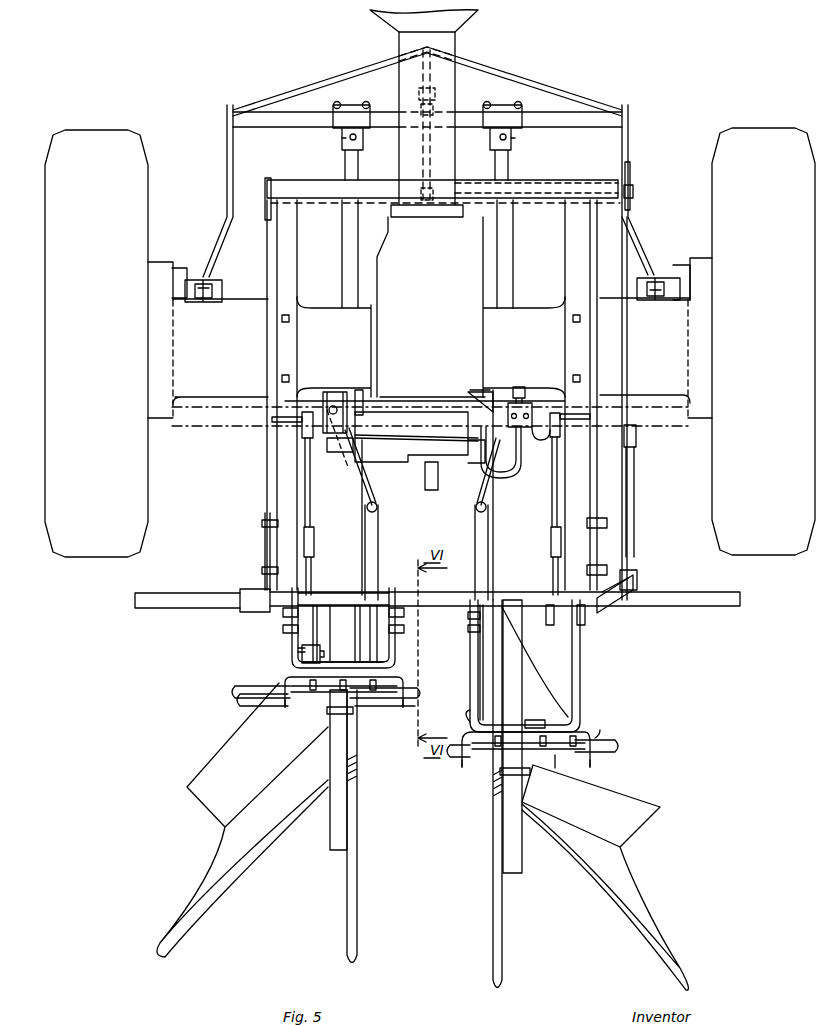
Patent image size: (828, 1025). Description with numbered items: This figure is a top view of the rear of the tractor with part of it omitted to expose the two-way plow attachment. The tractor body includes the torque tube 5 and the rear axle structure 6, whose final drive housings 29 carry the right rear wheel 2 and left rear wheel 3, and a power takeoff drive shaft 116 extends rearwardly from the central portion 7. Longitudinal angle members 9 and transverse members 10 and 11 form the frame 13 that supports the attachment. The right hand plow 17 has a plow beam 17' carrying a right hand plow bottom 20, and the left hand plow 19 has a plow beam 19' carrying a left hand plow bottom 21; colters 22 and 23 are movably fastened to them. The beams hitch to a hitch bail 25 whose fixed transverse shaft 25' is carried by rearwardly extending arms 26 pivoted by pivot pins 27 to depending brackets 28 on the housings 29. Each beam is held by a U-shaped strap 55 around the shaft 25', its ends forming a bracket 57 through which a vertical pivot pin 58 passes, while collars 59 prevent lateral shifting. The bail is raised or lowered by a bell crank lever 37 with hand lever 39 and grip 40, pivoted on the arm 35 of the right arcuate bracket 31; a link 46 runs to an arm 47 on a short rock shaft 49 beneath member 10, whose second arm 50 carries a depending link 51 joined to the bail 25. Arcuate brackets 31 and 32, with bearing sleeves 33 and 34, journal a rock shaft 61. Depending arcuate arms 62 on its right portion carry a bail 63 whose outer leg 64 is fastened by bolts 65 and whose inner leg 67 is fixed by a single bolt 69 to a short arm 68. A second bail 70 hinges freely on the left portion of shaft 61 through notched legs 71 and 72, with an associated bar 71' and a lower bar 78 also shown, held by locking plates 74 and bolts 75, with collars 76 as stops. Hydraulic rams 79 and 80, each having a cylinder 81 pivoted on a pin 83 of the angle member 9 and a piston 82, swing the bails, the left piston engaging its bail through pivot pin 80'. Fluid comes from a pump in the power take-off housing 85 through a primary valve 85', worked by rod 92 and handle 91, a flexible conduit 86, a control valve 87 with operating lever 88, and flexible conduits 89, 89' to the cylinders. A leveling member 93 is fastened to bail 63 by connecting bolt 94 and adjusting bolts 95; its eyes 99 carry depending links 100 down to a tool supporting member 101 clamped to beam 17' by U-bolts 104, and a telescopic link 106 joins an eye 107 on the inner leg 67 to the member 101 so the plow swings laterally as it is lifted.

The right rear wheel 2 is at (712, 152).
The left rear wheel 3 is at (148, 213).
The torque tube 5 is at (452, 42).
The rear axle structure 6 is at (217, 393).
The central portion 7 is at (432, 348).
The angle members 9 is at (267, 350).
The transverse member 10 is at (334, 184).
The transverse member 11 is at (436, 400).
The frame 13 is at (277, 455).
The right hand plow 17 is at (590, 795).
The plow beam 17' is at (530, 536).
The left hand plow 19 is at (257, 823).
The plow beam 19' is at (336, 525).
The right hand plow bottom 20 is at (630, 870).
The left hand plow bottom 21 is at (203, 888).
The colter 22 is at (472, 535).
The colter 23 is at (378, 545).
The hitch bail 25 is at (427, 81).
The fixed transverse shaft 25' is at (427, 128).
The rearwardly extending arms 26 is at (222, 246).
The pivot pins 27 is at (225, 290).
The depending brackets 28 is at (186, 270).
The final drive housings 29 is at (148, 290).
The arcuate bracket 31 is at (606, 550).
The arcuate bracket 32 is at (265, 548).
The bearing sleeve 33 is at (633, 607).
The bearing sleeve 34 is at (252, 613).
The arm 35 is at (612, 600).
The bell crank lever 37 is at (638, 572).
The hand lever portion 39 is at (637, 470).
The grip 40 is at (638, 434).
The link 46 is at (625, 332).
The arm 47 is at (633, 172).
The rock shaft 49 is at (635, 191).
The second arm 50 is at (424, 165).
The link 51 is at (432, 85).
The U-shaped strap 55 is at (351, 104).
The bracket 57 is at (342, 140).
The pivot pin 58 is at (358, 138).
The collars 59 is at (334, 106).
The rock shaft 61 is at (182, 600).
The depending arcuate arms 62 is at (552, 628).
The bail 63 is at (535, 722).
The outer leg 64 is at (580, 665).
The bolts 65 is at (582, 628).
The inner leg 67 is at (478, 668).
The short arm 68 is at (468, 640).
The bolt 69 is at (466, 615).
The second bail 70 is at (292, 666).
The leg 71 is at (329, 634).
The bar 71' is at (378, 634).
The leg 72 is at (298, 650).
The locking plate 74 is at (290, 612).
The bolts 75 is at (283, 630).
The collars 76 is at (310, 598).
The bottom bar 78 is at (298, 665).
The hydraulic ram 79 is at (532, 495).
The hydraulic ram 80 is at (321, 444).
The pivot pin 80' is at (336, 649).
The cylinder 81 is at (310, 510).
The piston 82 is at (304, 553).
The pin 83 is at (270, 420).
The power take-off housing 85 is at (411, 453).
The primary valve 85' is at (480, 465).
The flexible conduit 86 is at (516, 470).
The control valve 87 is at (532, 404).
The operating lever 88 is at (518, 387).
The flexible conduits 89 is at (545, 444).
The rod 89' is at (416, 444).
The handle 91 is at (474, 392).
The rod 92 is at (495, 392).
The leveling member 93 is at (403, 680).
The pivotal connecting bolt 94 is at (336, 689).
The adjusting bolts 95 is at (555, 768).
The eyes 99 is at (285, 705).
The depending links 100 is at (250, 684).
The tool supporting member 101 is at (598, 725).
The U-bolts 104 is at (335, 715).
The telescopic link 106 is at (528, 718).
The eye 107 is at (470, 716).
The power takeoff drive shaft 116 is at (430, 492).